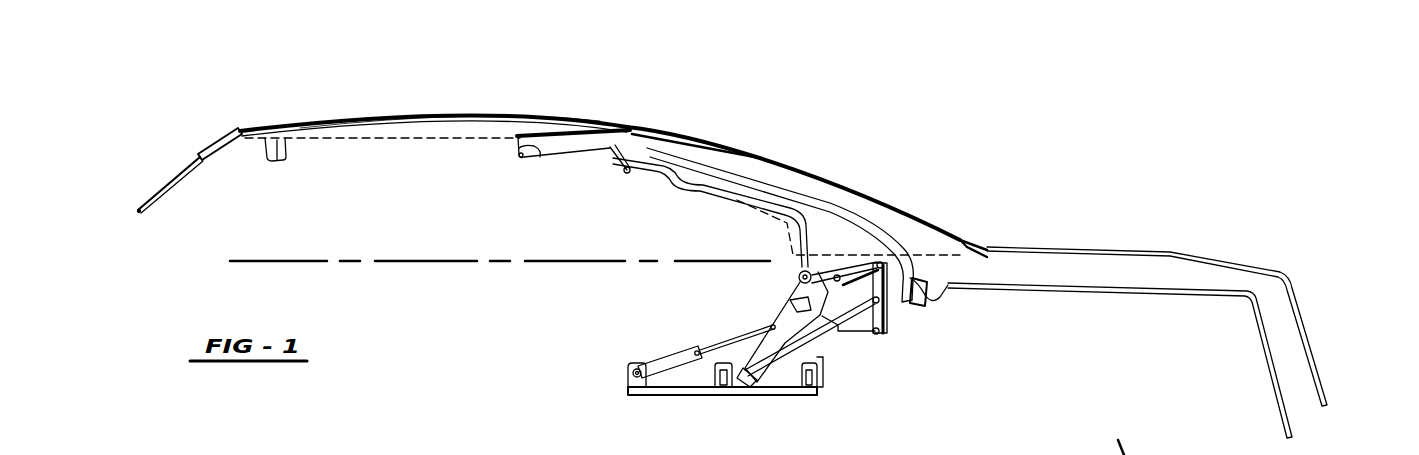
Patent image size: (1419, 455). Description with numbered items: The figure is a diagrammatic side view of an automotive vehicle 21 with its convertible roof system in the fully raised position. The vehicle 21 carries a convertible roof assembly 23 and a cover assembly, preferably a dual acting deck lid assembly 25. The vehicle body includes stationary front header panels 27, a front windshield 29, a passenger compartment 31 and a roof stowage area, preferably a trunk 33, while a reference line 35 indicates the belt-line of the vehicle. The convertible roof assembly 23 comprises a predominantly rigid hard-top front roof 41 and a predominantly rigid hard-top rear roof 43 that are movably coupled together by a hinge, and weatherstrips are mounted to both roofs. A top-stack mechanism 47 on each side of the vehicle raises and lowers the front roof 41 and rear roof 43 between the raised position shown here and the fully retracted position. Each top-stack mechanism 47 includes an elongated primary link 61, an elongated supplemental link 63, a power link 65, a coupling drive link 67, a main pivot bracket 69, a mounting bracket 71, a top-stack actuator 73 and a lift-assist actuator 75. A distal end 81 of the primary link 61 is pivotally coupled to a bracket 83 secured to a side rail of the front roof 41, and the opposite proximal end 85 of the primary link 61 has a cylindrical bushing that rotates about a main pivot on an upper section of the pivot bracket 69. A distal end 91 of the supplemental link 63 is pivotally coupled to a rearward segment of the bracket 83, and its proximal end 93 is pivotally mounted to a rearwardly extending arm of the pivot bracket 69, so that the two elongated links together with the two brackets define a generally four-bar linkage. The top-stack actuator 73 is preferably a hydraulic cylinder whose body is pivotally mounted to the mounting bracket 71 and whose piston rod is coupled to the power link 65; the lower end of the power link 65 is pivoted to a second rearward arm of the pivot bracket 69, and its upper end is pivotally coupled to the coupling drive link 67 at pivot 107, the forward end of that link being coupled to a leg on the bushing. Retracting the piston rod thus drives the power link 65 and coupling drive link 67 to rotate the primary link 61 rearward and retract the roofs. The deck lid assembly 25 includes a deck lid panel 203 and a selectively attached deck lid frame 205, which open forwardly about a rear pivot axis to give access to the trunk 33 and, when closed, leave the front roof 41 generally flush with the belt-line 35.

The automotive vehicle 21 is at (160, 155).
The convertible roof assembly 23 is at (397, 91).
The deck lid assembly 25 is at (1252, 170).
The front header panels 27 is at (220, 140).
The front windshield 29 is at (140, 210).
The passenger compartment 31 is at (455, 303).
The trunk 33 is at (1137, 342).
The reference line 35 is at (278, 261).
The front roof 41 is at (480, 113).
The rear roof 43 is at (770, 157).
The top-stack mechanism 47 is at (708, 291).
The primary link 61 is at (690, 183).
The supplemental link 63 is at (827, 257).
The power link 65 is at (893, 310).
The coupling drive link 67 is at (918, 278).
The main pivot bracket 69 is at (783, 315).
The mounting bracket 71 is at (677, 397).
The top-stack actuator 73 is at (782, 360).
The lift-assist actuator 75 is at (658, 365).
The distal end of primary link 81 is at (520, 153).
The bracket 83 is at (527, 137).
The proximal end of primary link 85 is at (867, 257).
The distal end of supplemental link 91 is at (633, 177).
The proximal end of supplemental link 93 is at (947, 290).
The pivot 107 is at (960, 257).
The deck lid panel 203 is at (1317, 345).
The deck lid frame 205 is at (1253, 318).